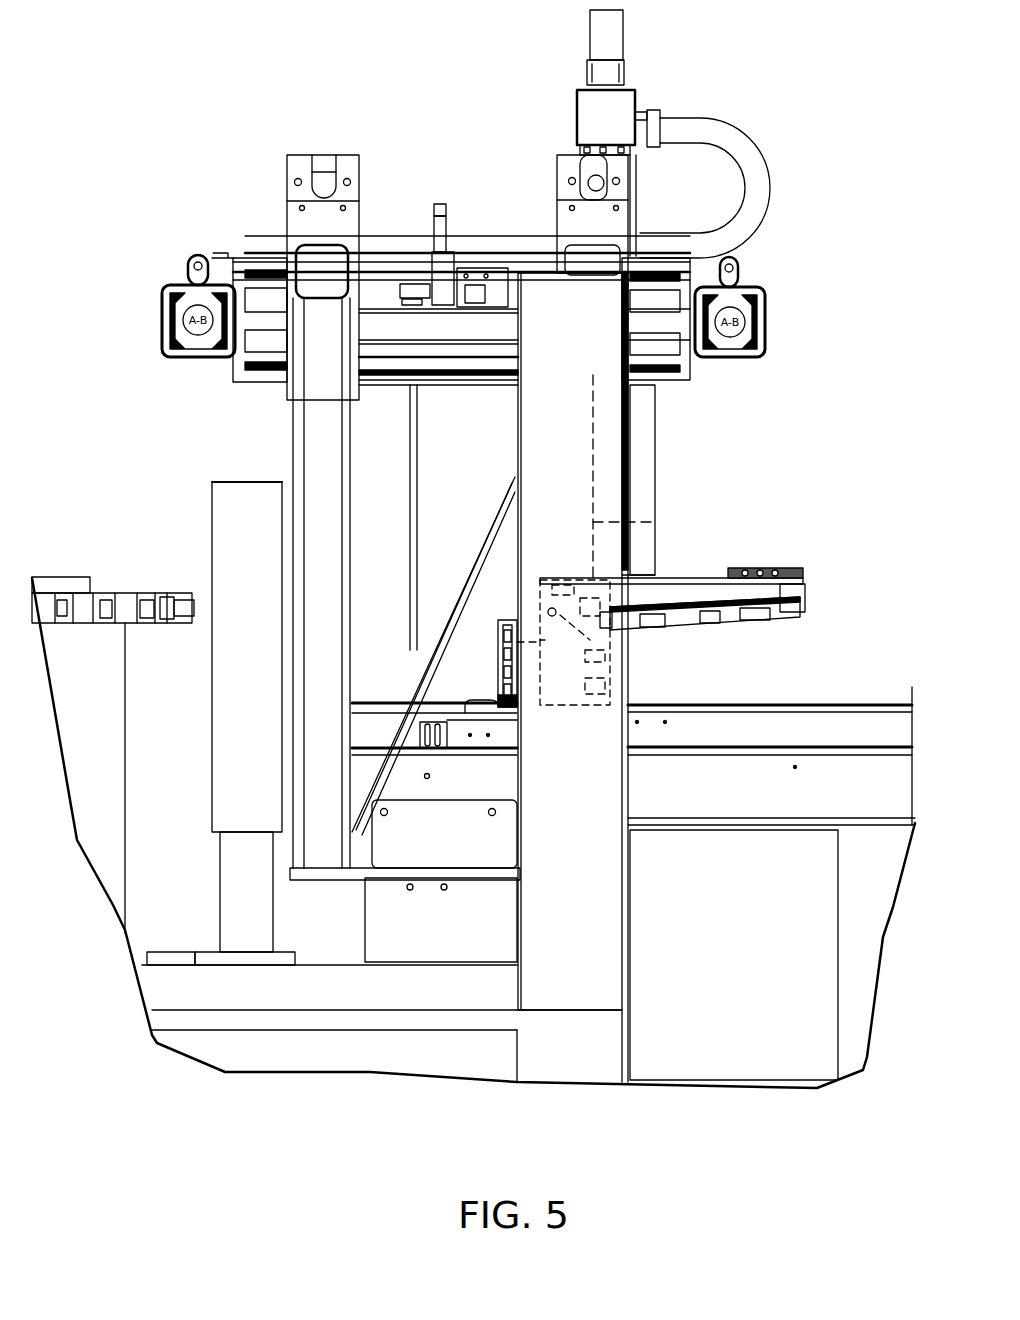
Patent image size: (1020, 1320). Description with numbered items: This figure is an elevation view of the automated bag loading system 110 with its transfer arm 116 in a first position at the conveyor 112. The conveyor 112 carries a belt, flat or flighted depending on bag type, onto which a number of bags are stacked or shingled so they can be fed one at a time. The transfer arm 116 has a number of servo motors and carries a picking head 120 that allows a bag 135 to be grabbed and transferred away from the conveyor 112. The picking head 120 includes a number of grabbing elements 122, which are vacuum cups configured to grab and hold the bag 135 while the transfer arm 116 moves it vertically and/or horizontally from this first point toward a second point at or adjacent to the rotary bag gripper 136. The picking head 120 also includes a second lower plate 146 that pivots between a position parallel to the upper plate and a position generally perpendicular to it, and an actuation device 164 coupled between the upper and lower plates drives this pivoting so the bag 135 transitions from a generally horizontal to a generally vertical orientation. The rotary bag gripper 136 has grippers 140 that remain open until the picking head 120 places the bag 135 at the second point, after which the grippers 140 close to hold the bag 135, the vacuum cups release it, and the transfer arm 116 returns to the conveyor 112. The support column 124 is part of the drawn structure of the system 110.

The bag loading system 110 is at (762, 470).
The conveyor 112 is at (777, 722).
The transfer arm 116 is at (645, 555).
The picking head 120 is at (717, 575).
The grabbing elements 122 is at (500, 655).
The support column 124 is at (257, 500).
The bag 135 is at (507, 710).
The rotary bag gripper 136 is at (125, 600).
The grippers 140 is at (185, 605).
The second lower plate 146 is at (228, 495).
The actuation device 164 is at (712, 615).